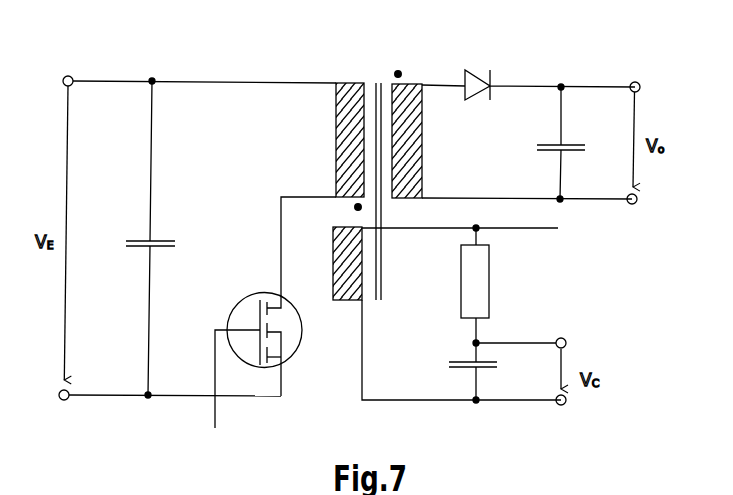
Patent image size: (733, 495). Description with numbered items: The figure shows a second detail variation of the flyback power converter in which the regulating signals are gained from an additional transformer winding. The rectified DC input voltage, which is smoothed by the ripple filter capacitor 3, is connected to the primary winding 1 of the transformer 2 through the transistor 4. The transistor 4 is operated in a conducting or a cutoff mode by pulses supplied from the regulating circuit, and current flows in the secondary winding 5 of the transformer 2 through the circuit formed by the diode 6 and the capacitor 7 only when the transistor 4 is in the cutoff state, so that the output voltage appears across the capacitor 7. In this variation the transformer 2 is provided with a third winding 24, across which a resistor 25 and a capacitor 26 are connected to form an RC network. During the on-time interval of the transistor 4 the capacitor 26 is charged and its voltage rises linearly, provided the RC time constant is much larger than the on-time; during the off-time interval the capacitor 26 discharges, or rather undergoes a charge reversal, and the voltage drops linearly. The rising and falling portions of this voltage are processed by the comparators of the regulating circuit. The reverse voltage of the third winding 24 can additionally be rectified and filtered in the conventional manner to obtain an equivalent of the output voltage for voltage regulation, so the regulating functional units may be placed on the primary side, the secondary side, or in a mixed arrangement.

The primary winding 1 is at (350, 97).
The transformer 2 is at (376, 97).
The ripple filter capacitor 3 is at (148, 240).
The transistor 4 is at (238, 340).
The secondary winding 5 is at (408, 87).
The diode 6 is at (477, 80).
The capacitor 7 is at (561, 148).
The third winding 24 is at (336, 258).
The resistor 25 is at (477, 281).
The capacitor 26 is at (477, 362).